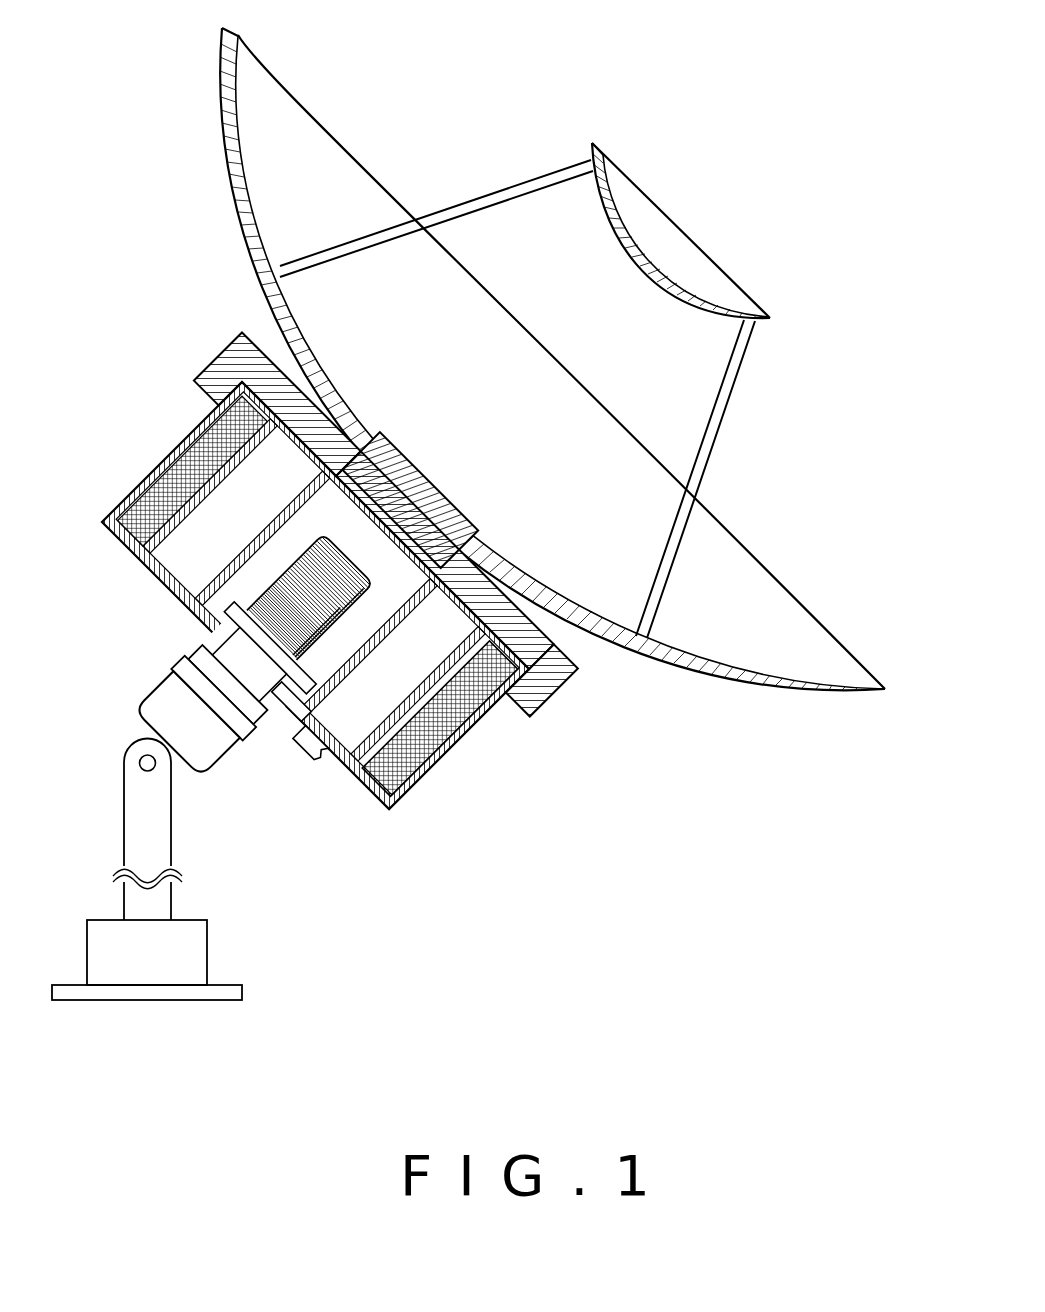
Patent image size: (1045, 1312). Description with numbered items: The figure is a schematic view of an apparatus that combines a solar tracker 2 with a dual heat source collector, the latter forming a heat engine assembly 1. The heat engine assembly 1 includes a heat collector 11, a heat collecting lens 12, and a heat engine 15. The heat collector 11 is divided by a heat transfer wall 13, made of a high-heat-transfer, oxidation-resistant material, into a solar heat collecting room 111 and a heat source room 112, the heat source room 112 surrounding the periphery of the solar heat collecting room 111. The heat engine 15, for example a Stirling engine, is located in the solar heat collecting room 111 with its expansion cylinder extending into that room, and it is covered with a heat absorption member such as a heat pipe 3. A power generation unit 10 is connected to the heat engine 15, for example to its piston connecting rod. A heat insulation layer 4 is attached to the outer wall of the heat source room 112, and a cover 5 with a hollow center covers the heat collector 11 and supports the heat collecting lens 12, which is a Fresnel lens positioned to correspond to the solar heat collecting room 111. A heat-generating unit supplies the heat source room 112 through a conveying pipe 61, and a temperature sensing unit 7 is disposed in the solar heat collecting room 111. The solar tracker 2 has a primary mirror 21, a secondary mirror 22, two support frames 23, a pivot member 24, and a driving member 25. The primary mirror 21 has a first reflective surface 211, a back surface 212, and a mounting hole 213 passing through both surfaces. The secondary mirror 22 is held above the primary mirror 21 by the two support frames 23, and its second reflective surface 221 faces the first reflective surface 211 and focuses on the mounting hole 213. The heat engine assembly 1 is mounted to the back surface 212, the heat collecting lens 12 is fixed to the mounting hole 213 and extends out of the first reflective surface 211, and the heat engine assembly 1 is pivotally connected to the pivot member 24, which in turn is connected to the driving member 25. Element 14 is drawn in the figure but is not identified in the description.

The heat engine assembly 1 is at (430, 814).
The solar tracker 2 is at (878, 418).
The heat pipe 3 is at (290, 556).
The heat insulation layer 4 is at (447, 667).
The cover 5 is at (548, 620).
The temperature sensing unit 7 is at (286, 702).
The power generation unit 10 is at (142, 700).
The heat collector 11 is at (165, 580).
The heat collecting lens 12 is at (323, 443).
The heat transfer wall 13 is at (487, 643).
The cover block 14 is at (229, 356).
The heat engine 15 is at (250, 640).
The primary mirror 21 is at (878, 674).
The secondary mirror 22 is at (758, 305).
The support frames 23 is at (462, 207).
The pivot member 24 is at (138, 828).
The driving member 25 is at (195, 948).
The conveying pipe 61 is at (315, 752).
The solar heat collecting room 111 is at (195, 556).
The heat source room 112 is at (148, 543).
The first reflective surface 211 is at (806, 668).
The back surface 212 is at (840, 690).
The mounting hole 213 is at (476, 546).
The second reflective surface 221 is at (713, 322).